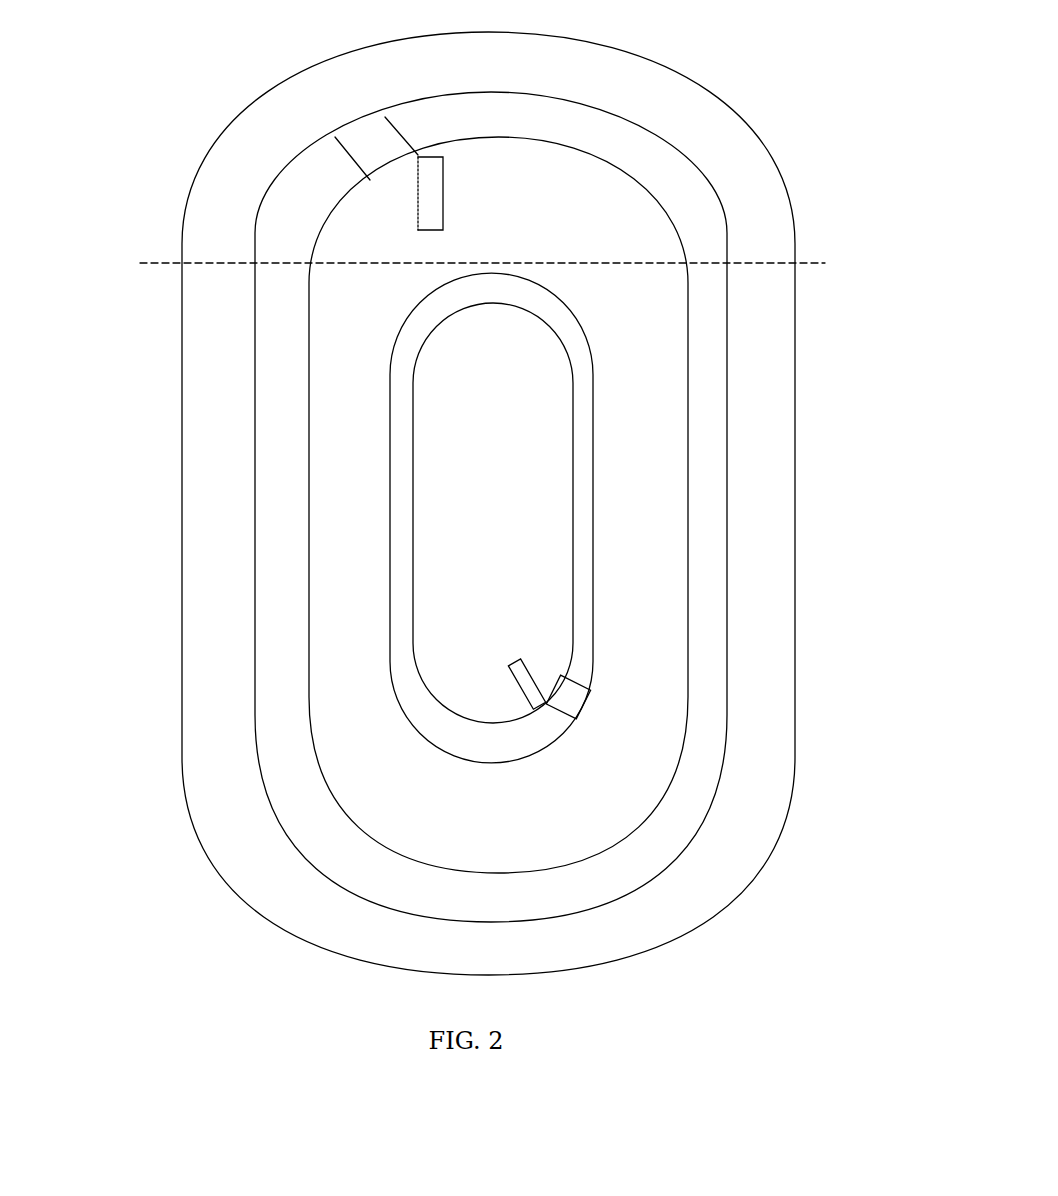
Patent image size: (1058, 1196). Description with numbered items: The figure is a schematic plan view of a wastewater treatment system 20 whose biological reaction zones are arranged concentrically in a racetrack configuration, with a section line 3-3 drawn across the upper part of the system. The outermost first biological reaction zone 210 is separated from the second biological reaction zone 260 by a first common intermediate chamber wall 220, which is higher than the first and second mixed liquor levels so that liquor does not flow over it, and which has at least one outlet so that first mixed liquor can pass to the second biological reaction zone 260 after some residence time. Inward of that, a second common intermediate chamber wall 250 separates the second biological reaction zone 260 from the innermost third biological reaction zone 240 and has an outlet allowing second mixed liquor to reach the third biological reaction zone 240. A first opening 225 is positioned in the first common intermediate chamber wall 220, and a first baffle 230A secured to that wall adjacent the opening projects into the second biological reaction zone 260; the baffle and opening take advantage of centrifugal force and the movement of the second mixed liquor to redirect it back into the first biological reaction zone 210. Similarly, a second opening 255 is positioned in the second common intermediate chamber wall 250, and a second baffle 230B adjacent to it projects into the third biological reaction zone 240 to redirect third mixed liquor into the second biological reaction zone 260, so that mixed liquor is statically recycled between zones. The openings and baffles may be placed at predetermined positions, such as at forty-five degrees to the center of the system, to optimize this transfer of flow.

The wastewater treatment system 20 is at (118, 110).
The first biological reaction zone 210 is at (200, 415).
The first common intermediate chamber wall 220 is at (632, 148).
The first opening 225 is at (382, 135).
The first baffle 230A is at (425, 198).
The second baffle 230B is at (517, 667).
The third biological reaction zone 240 is at (493, 513).
The second common intermediate chamber wall 250 is at (558, 323).
The second opening 255 is at (578, 690).
The second biological reaction zone 260 is at (498, 505).
The section line 3-3 is at (815, 258).